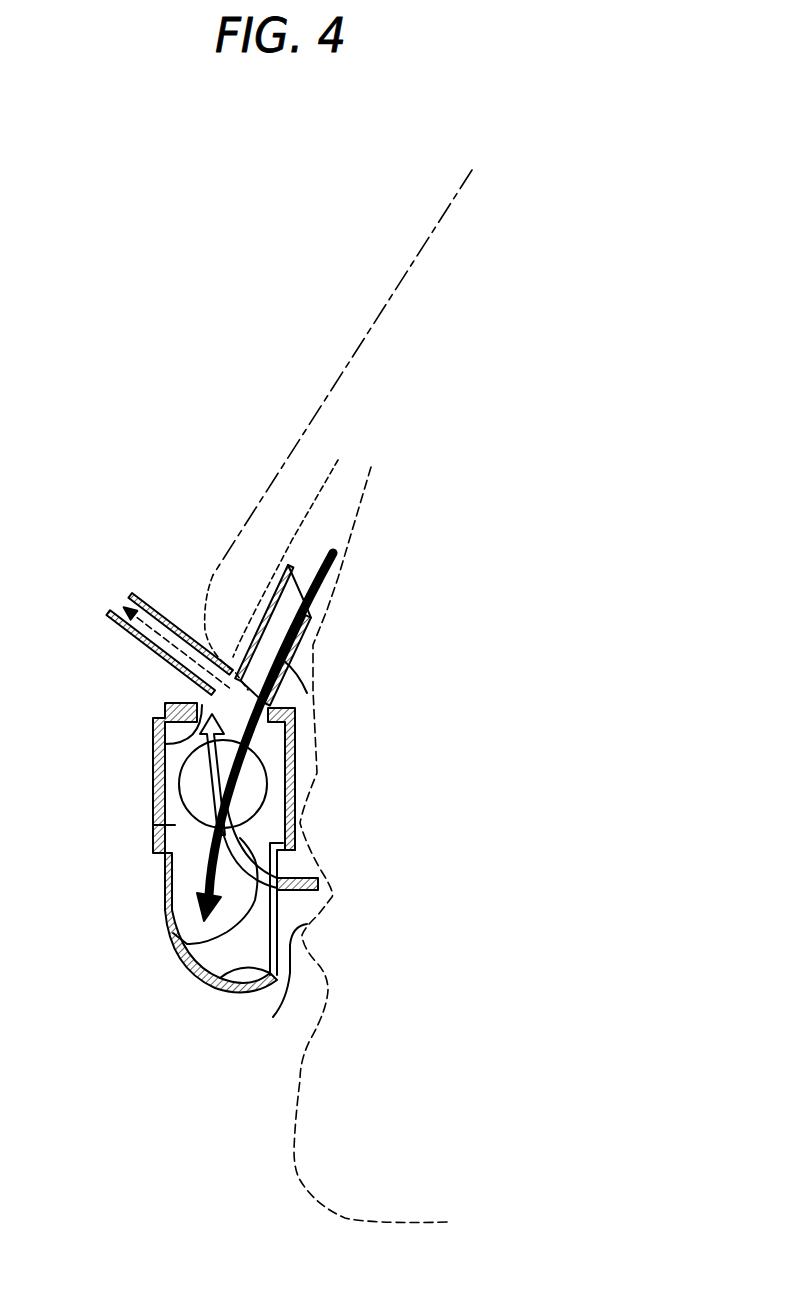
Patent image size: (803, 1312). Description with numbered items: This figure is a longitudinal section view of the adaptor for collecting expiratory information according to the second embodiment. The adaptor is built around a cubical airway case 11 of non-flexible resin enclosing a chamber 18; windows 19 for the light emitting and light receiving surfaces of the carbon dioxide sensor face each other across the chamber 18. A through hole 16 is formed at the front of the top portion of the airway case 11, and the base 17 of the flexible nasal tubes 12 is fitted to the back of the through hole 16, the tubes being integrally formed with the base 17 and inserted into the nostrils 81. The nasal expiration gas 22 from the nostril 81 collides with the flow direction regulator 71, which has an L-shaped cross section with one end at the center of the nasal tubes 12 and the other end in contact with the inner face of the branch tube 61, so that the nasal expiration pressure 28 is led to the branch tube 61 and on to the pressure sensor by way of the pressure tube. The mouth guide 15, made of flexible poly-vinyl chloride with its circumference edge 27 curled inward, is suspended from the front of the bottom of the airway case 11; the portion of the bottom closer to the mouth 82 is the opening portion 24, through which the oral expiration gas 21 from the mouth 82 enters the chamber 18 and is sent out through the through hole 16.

The airway case 11 is at (152, 723).
The nasal tubes 12 is at (310, 633).
The mouth guide 15 is at (173, 933).
The through hole 16 is at (153, 747).
The base 17 is at (283, 703).
The chamber 18 is at (153, 827).
The windows 19 is at (257, 785).
The oral expiration gas 21 is at (190, 946).
The nasal expiration gas 22 is at (327, 580).
The opening portion 24 is at (278, 913).
The circumference edge 27 is at (228, 973).
The nasal expiration pressure 28 is at (162, 620).
The branch tube 61 is at (178, 673).
The flow direction regulator 71 is at (240, 647).
The nostrils 81 is at (347, 503).
The mouth 82 is at (273, 1017).